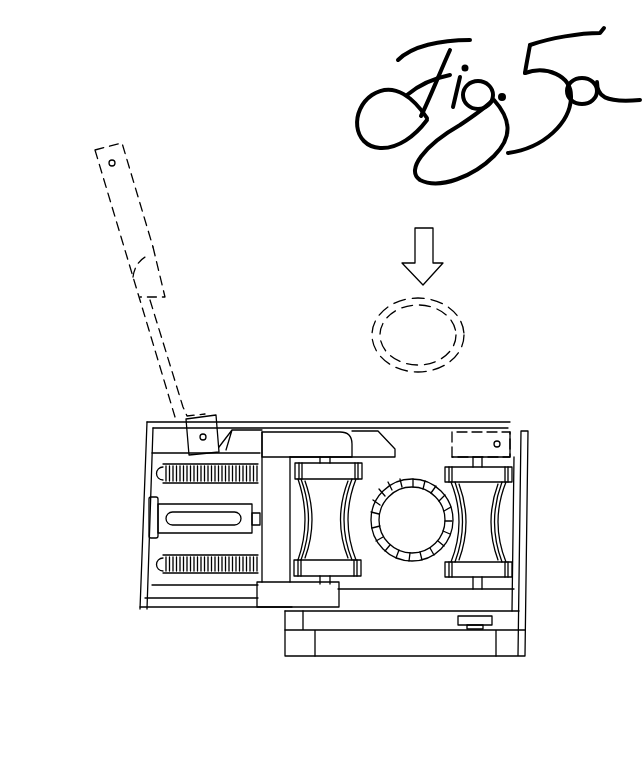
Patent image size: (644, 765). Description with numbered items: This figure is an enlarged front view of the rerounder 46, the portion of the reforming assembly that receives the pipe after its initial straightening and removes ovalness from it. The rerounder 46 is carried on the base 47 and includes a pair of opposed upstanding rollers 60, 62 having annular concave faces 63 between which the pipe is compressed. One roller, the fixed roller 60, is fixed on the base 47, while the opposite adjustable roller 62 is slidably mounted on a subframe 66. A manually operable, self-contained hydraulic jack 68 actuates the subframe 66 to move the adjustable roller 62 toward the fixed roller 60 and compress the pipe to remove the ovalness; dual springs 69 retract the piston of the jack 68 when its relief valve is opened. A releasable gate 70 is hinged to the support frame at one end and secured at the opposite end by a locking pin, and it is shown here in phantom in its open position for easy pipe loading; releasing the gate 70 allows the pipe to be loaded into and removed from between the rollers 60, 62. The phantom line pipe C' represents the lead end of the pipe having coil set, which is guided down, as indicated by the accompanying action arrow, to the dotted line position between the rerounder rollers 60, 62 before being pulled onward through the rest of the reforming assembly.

The rerounder 46 is at (528, 367).
The base 47 is at (463, 647).
The fixed roller 60 is at (495, 533).
The adjustable roller 62 is at (310, 560).
The annular concave faces 63 is at (447, 567).
The subframe 66 is at (305, 447).
The hydraulic jack 68 is at (158, 537).
The dual springs 69 is at (177, 471).
The releasable gate 70 is at (142, 211).
The phantom line pipe C' is at (446, 300).